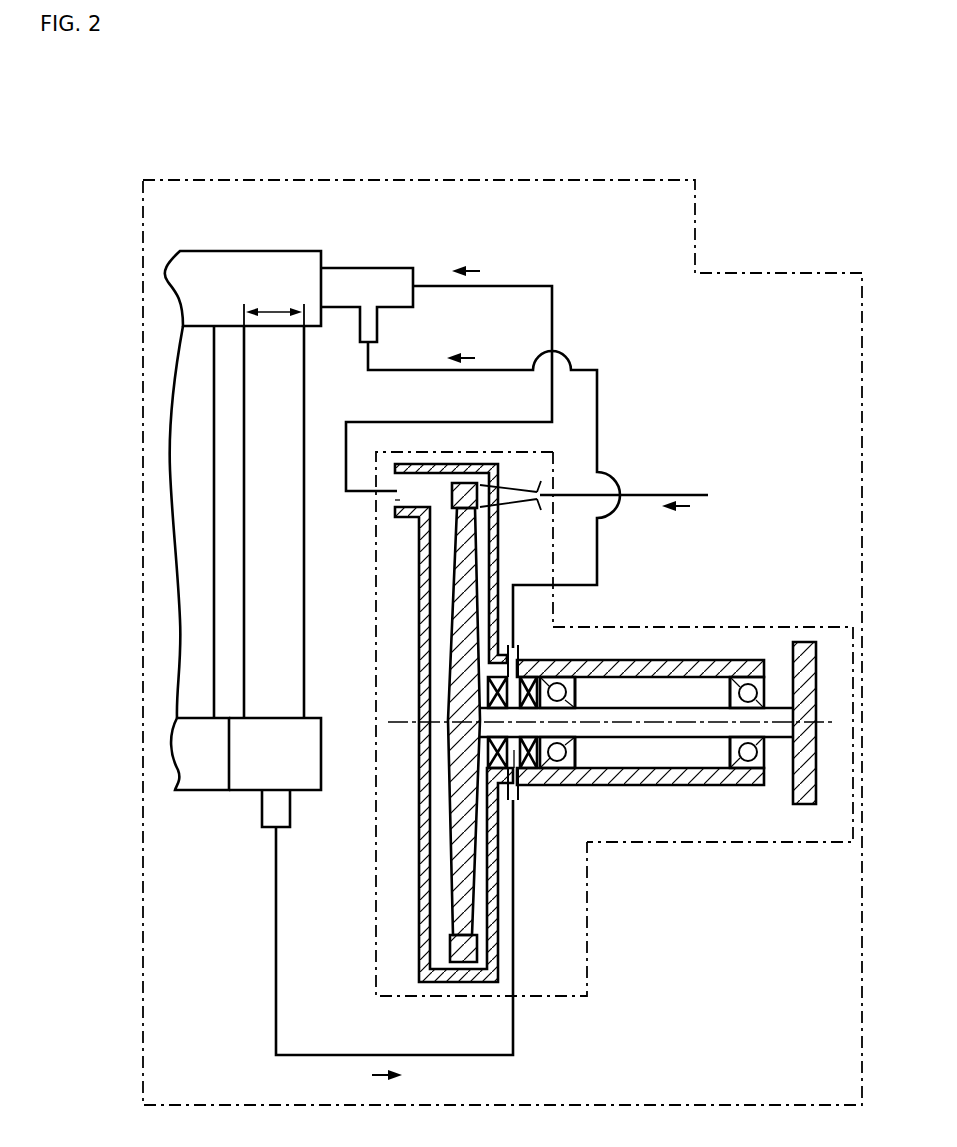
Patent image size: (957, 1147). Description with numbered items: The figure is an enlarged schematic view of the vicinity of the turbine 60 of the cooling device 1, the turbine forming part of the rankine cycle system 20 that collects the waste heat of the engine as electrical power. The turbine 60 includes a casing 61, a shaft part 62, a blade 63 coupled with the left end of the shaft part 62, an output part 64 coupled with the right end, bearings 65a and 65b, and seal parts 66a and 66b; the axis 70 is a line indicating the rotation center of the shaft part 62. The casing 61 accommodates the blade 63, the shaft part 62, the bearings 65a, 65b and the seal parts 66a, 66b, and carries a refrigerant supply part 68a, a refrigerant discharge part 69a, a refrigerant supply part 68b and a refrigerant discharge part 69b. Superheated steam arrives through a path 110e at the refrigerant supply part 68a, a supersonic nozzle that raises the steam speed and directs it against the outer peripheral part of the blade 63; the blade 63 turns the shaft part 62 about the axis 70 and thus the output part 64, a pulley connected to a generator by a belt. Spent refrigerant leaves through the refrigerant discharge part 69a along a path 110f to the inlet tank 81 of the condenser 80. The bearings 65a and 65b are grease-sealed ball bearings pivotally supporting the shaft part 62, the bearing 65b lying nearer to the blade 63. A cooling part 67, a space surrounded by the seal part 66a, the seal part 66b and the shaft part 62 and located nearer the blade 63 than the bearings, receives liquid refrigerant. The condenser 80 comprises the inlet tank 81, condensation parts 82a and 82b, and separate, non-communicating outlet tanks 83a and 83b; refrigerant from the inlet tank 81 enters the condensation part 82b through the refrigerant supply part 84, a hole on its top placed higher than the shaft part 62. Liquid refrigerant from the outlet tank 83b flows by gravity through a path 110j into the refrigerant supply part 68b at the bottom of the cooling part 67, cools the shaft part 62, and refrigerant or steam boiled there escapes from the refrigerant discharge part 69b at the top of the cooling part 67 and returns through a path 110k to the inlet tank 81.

The cooling device 1 is at (842, 197).
The rankine cycle system 20 is at (695, 218).
The condenser 80 is at (256, 517).
The inlet tank 81 is at (221, 263).
The refrigerant supply part 84 is at (275, 310).
The condensation part 82a is at (193, 565).
The condensation part 82b is at (305, 612).
The outlet tank 83a is at (212, 778).
The outlet tank 83b is at (302, 778).
The path 110f is at (513, 285).
The path 110k is at (597, 404).
The path 110e is at (662, 493).
The path 110j is at (276, 950).
The turbine 60 is at (590, 724).
The axis 70 is at (405, 722).
The casing 61 is at (420, 917).
The blade 63 is at (450, 670).
The refrigerant discharge part 69a is at (397, 500).
The refrigerant discharge part 69b is at (547, 650).
The refrigerant supply part 68a is at (522, 505).
The refrigerant supply part 68b is at (514, 750).
The seal part 66a is at (520, 768).
The seal part 66b is at (520, 677).
The cooling part 67 is at (518, 790).
The bearing 65a is at (740, 770).
The bearing 65b is at (575, 770).
The shaft part 62 is at (668, 745).
The output part 64 is at (798, 805).